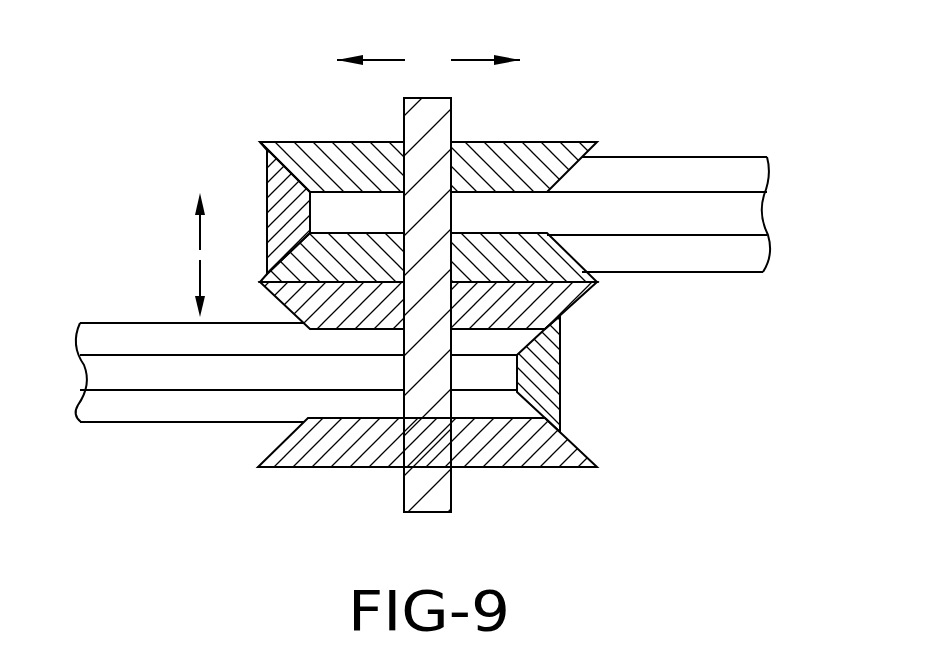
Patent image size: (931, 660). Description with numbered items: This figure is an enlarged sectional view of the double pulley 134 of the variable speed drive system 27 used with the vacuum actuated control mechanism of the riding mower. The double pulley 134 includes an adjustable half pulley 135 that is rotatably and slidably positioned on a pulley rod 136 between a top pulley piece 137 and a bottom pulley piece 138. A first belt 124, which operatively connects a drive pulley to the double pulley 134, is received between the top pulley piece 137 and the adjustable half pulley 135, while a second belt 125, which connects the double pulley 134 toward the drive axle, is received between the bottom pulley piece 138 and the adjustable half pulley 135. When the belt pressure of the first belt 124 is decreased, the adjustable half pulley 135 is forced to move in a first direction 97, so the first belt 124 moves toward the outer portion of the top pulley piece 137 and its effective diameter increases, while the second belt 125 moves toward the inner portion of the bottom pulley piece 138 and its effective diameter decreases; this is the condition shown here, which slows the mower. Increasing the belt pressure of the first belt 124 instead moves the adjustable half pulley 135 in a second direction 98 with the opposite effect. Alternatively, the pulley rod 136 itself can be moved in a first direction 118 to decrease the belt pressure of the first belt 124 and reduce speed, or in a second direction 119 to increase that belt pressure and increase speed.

The variable speed drive system 27 is at (182, 114).
The first direction 97 is at (197, 243).
The second direction 98 is at (197, 268).
The first direction 118 is at (472, 60).
The second direction 119 is at (385, 60).
The first belt 124 is at (730, 163).
The second belt 125 is at (95, 340).
The double pulley 134 is at (605, 107).
The adjustable half pulley 135 is at (555, 300).
The pulley rod 136 is at (423, 498).
The top pulley piece 137 is at (333, 158).
The bottom pulley piece 138 is at (318, 457).